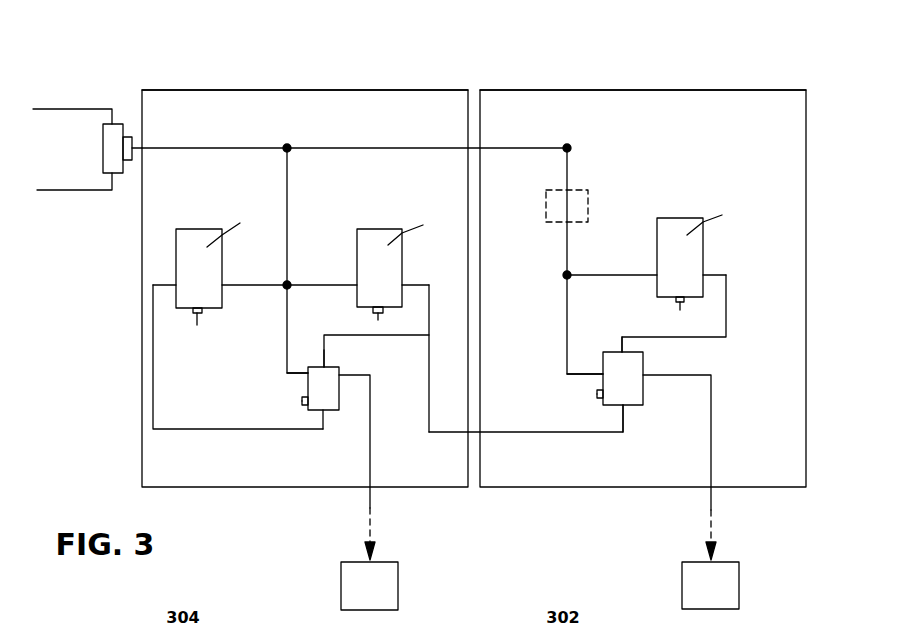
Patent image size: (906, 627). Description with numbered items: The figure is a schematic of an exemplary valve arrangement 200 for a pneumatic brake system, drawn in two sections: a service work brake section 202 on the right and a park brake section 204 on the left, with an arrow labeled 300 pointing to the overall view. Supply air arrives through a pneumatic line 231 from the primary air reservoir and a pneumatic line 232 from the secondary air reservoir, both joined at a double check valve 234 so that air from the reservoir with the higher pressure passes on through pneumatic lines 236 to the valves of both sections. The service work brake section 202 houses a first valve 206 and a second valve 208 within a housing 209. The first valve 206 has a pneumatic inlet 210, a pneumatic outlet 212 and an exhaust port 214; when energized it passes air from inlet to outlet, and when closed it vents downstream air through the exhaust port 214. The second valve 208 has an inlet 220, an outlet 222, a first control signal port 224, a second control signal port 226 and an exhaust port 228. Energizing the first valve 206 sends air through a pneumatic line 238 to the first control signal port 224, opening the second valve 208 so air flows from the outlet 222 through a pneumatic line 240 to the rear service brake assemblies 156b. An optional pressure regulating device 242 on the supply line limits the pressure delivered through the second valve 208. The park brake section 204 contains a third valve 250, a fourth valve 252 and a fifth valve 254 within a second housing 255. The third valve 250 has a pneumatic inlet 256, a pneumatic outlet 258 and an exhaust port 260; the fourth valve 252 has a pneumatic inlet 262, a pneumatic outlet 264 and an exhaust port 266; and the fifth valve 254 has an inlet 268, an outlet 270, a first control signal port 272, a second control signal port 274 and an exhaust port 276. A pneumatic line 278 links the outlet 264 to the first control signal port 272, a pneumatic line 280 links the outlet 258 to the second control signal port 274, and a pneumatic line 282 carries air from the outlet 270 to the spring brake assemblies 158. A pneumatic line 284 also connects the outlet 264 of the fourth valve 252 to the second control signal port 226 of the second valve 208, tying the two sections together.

The valve arrangement 200 is at (757, 76).
The vehicle 300 is at (762, 626).
The service work brake section 202 is at (540, 110).
The park brake section 204 is at (208, 110).
The housing 209 is at (625, 90).
The second housing 255 is at (322, 90).
The pneumatic line 231 is at (80, 109).
The pneumatic line 232 is at (57, 190).
The double check valve 234 is at (103, 150).
The pneumatic lines 236 is at (325, 148).
The pressure regulating device 242 is at (585, 190).
The first valve 206 is at (689, 258).
The second valve 208 is at (620, 378).
The pneumatic inlet 210 is at (650, 275).
The pneumatic outlet 212 is at (705, 265).
The exhaust port 214 is at (680, 310).
The inlet 220 is at (600, 374).
The outlet 222 is at (650, 370).
The first control signal port 224 is at (622, 345).
The second control signal port 226 is at (625, 407).
The exhaust port 228 is at (597, 395).
The pneumatic line 238 is at (726, 310).
The pneumatic line 240 is at (711, 450).
The third valve 250 is at (208, 268).
The fourth valve 252 is at (390, 269).
The fifth valve 254 is at (320, 388).
The pneumatic inlet 256 is at (222, 283).
The pneumatic outlet 258 is at (176, 285).
The exhaust port 260 is at (197, 325).
The pneumatic inlet 262 is at (357, 282).
The pneumatic outlet 264 is at (402, 280).
The exhaust port 266 is at (378, 320).
The inlet 268 is at (300, 372).
The outlet 270 is at (345, 373).
The first control signal port 272 is at (325, 363).
The second control signal port 274 is at (323, 415).
The exhaust port 276 is at (302, 401).
The pneumatic line 278 is at (429, 350).
The pneumatic line 280 is at (153, 350).
The pneumatic line 282 is at (370, 472).
The pneumatic line 284 is at (508, 432).
The spring brake assemblies 158 is at (398, 585).
The rear service brake assemblies 156b is at (739, 585).